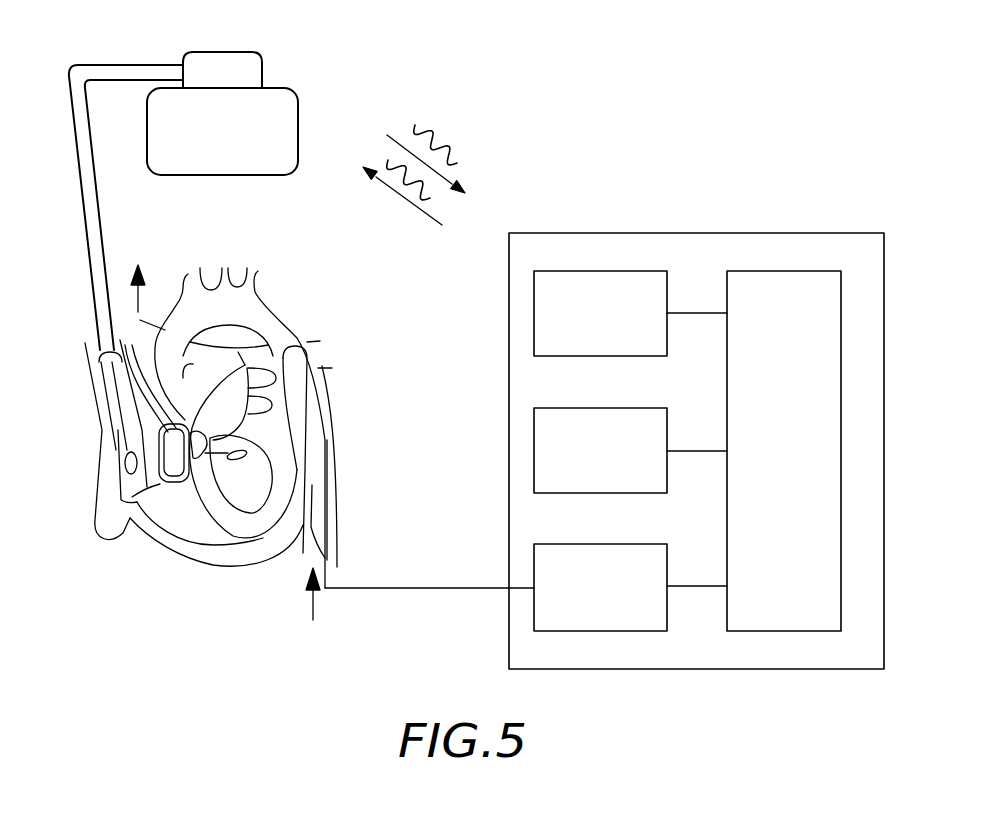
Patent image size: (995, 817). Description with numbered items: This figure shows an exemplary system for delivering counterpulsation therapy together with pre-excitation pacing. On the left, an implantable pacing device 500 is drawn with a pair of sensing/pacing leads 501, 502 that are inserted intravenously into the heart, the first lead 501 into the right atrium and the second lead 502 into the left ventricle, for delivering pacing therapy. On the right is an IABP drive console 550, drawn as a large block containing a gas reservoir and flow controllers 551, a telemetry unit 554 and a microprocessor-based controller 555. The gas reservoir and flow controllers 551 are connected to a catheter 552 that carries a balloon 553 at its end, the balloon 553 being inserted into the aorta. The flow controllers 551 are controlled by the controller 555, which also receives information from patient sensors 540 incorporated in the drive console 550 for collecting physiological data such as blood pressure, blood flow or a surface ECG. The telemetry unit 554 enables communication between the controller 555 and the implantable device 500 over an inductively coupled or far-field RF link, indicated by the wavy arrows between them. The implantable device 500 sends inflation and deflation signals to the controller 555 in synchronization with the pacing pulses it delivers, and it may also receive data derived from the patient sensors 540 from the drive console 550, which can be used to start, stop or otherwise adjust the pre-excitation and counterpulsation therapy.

The implantable pacing device 500 is at (312, 70).
The sensing/pacing lead 501 is at (88, 214).
The sensing/pacing lead 502 is at (103, 216).
The patient sensors 540 is at (650, 408).
The IABP drive console 550 is at (867, 232).
The gas reservoir and flow controllers 551 is at (648, 544).
The catheter 552 is at (418, 583).
The balloon 553 is at (327, 435).
The telemetry unit 554 is at (650, 271).
The controller 555 is at (825, 271).